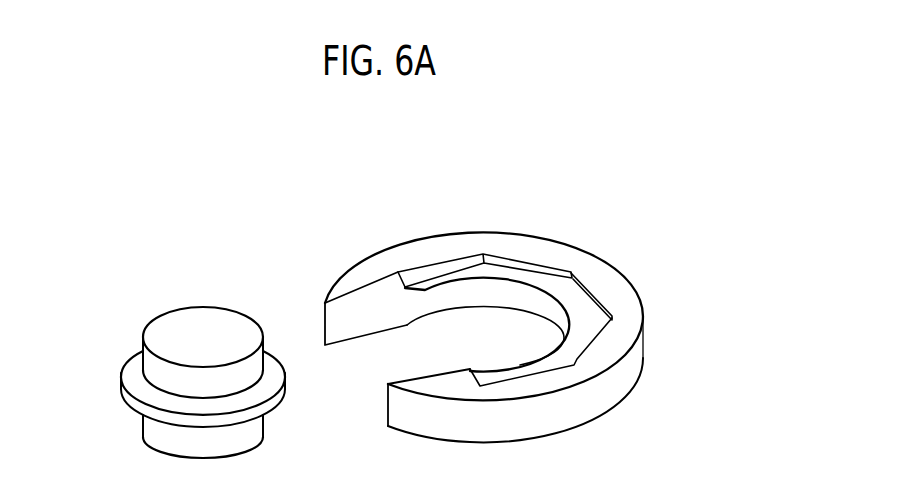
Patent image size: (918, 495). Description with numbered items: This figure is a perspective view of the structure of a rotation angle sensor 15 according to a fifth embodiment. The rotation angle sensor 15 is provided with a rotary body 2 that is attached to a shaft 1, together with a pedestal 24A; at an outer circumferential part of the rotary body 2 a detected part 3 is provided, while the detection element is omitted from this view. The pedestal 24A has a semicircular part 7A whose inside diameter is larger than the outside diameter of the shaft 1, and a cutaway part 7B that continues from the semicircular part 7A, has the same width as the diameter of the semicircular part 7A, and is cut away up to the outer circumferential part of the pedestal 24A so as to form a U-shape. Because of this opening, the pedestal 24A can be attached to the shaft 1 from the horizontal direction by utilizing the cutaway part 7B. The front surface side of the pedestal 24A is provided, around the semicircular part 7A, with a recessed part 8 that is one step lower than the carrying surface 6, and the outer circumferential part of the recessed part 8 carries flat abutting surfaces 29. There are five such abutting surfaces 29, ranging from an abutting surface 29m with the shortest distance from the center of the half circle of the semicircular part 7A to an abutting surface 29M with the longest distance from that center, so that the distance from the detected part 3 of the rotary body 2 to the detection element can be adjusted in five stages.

The shaft 1 is at (175, 436).
The rotary body 2 is at (132, 368).
The detected part 3 is at (138, 405).
The carrying surface 6 is at (617, 295).
The semicircular part 7A is at (503, 347).
The cutaway part 7B is at (404, 367).
The recessed part 8 is at (573, 347).
The rotation angle sensor 15 is at (734, 215).
The pedestal 24A is at (637, 355).
The abutting surface 29 is at (588, 277).
The abutting surface 29m is at (433, 272).
The abutting surface 29M is at (540, 367).